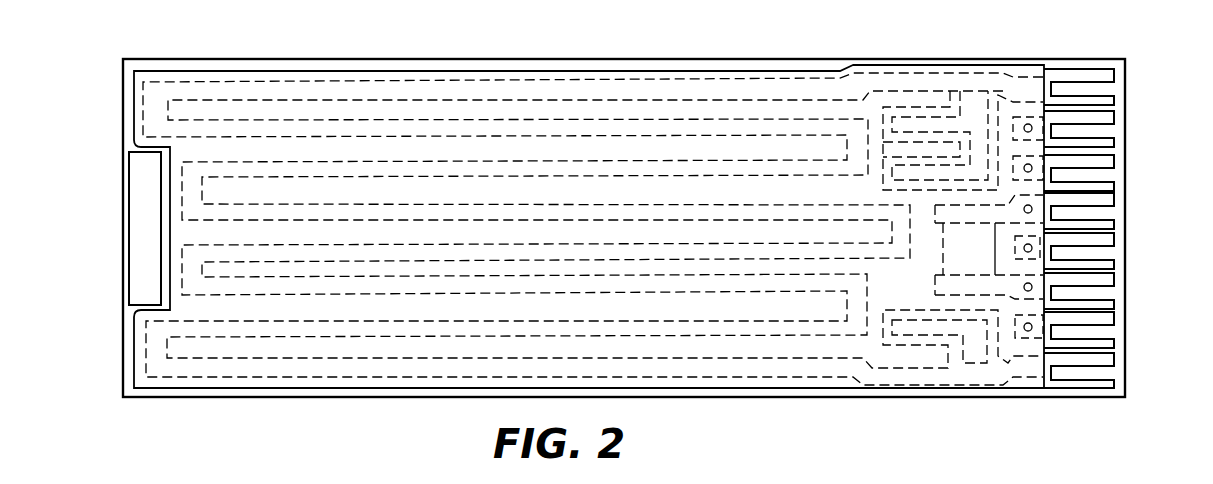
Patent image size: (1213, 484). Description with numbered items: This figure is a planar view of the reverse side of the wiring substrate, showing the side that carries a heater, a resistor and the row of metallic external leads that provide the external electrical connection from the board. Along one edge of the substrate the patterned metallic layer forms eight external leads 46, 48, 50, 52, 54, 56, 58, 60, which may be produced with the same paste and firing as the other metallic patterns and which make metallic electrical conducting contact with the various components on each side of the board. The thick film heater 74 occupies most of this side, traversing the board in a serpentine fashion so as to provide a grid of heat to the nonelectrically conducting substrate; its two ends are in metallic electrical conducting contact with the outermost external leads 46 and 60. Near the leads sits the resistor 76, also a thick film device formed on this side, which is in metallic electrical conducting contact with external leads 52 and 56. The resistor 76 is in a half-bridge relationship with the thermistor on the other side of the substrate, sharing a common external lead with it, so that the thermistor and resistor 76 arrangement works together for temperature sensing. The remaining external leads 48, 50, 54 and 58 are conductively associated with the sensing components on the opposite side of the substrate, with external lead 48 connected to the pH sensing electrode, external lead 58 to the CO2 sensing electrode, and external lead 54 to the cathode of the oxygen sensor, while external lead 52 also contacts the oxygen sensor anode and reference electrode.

The external lead 46 is at (1103, 76).
The external lead 48 is at (1103, 119).
The external lead 50 is at (1103, 163).
The external lead 52 is at (1103, 201).
The external lead 54 is at (1103, 241).
The external lead 56 is at (1103, 281).
The external lead 58 is at (1103, 321).
The external lead 60 is at (1103, 361).
The thick film heater 74 is at (672, 88).
The resistor 76 is at (948, 257).